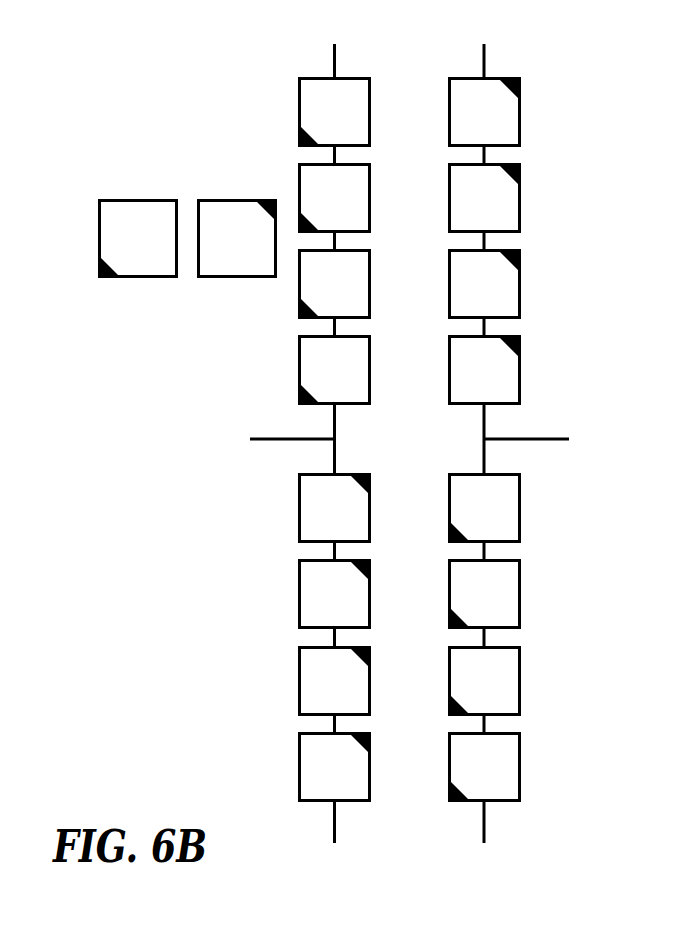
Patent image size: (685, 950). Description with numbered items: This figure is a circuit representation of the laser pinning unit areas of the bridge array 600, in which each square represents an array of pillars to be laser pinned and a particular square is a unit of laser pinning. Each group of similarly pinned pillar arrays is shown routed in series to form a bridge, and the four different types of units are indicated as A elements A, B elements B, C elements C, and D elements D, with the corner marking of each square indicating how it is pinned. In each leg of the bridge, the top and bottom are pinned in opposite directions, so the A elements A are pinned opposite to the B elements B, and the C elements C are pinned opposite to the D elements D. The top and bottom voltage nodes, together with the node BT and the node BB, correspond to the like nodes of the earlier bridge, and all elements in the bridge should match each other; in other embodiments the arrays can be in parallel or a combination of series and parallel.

The bridge array 600 is at (208, 137).
The node BT is at (334, 62).
The node BB is at (334, 817).
The A elements A is at (334, 242).
The B elements B is at (336, 637).
The C elements C is at (485, 240).
The D elements D is at (484, 639).